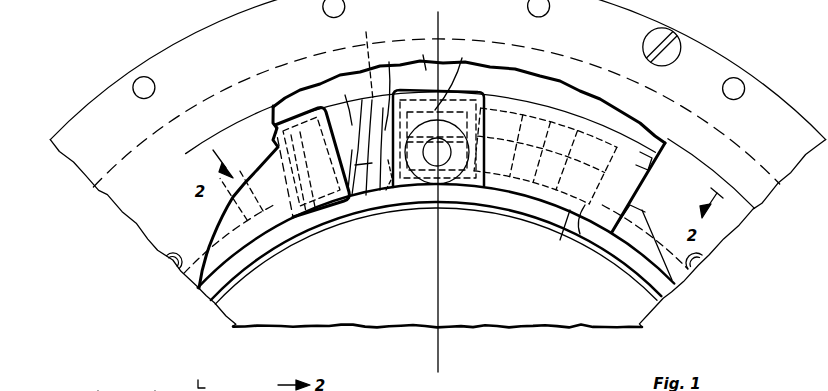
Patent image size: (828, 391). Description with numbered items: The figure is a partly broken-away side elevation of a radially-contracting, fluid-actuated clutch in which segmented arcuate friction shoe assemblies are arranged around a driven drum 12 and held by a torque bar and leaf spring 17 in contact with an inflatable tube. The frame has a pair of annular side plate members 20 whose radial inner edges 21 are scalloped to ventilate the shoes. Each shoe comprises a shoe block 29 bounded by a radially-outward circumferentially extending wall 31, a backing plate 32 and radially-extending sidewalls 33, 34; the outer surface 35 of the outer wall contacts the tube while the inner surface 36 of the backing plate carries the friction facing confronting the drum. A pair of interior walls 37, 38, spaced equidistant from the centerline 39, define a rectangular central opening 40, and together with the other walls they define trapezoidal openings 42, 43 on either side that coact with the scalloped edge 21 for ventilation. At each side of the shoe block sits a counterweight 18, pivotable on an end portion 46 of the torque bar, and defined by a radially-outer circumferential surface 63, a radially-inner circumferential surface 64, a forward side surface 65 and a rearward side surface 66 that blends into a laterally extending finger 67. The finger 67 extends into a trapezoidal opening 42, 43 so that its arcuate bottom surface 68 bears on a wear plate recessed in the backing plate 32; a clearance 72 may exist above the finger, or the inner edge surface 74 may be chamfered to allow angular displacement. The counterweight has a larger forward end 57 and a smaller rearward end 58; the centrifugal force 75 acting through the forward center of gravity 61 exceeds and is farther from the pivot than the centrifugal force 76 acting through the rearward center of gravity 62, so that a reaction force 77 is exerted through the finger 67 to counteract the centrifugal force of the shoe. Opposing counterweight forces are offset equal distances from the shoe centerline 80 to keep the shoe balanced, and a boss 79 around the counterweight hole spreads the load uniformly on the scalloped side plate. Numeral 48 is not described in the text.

The drum 12 is at (463, 192).
The leaf spring 17 is at (488, 73).
The counterweight 18 is at (220, 384).
The side plate member 20 is at (97, 382).
The radial inner edge 21 is at (222, 222).
The shoe block 29 is at (656, 162).
The radially-outward circumferentially extending wall 31 is at (339, 110).
The backing plate 32 is at (346, 222).
The radially-extending sidewall 33 is at (535, 212).
The radially-extending sidewall 34 is at (312, 224).
The outer surface 35 is at (356, 105).
The inner surface 36 is at (421, 216).
The interior wall 37 is at (488, 131).
The interior wall 38 is at (420, 100).
The centerline 39 is at (440, 257).
The rectangular central opening 40 is at (498, 100).
The trapezoidal opening 42 is at (503, 203).
The trapezoidal opening 43 is at (296, 100).
The end portion of torque bar 46 is at (445, 188).
The hydraulic cylinder 48 is at (154, 382).
The forward end 57 is at (580, 234).
The rearward end 58 is at (368, 212).
The center of gravity 61 is at (522, 148).
The center of gravity 62 is at (410, 192).
The radially-outer circumferential surface 63 is at (573, 108).
The radially-inner circumferential surface 64 is at (563, 240).
The forward side surface 65 is at (640, 190).
The rearward side surface 66 is at (422, 54).
The finger 67 is at (305, 176).
The bottom surface 68 is at (390, 232).
The clearance 72 is at (312, 163).
The inner edge surface 74 is at (367, 57).
The centrifugal force 75 is at (554, 156).
The centrifugal force 76 is at (388, 86).
The reaction force 77 is at (385, 210).
The boss 79 is at (454, 75).
The shoe centerline 80 is at (204, 374).